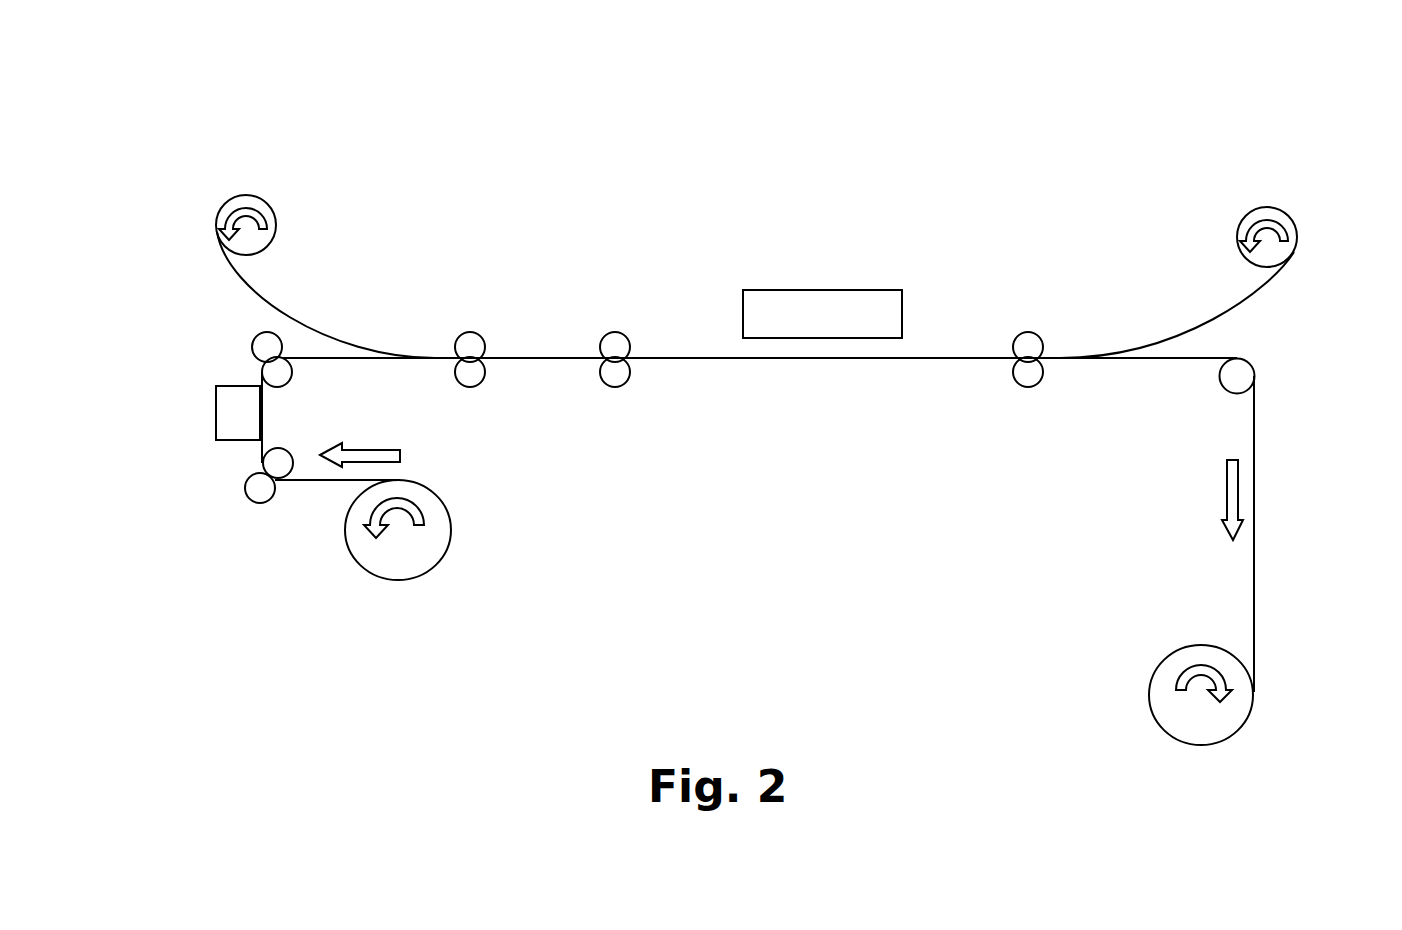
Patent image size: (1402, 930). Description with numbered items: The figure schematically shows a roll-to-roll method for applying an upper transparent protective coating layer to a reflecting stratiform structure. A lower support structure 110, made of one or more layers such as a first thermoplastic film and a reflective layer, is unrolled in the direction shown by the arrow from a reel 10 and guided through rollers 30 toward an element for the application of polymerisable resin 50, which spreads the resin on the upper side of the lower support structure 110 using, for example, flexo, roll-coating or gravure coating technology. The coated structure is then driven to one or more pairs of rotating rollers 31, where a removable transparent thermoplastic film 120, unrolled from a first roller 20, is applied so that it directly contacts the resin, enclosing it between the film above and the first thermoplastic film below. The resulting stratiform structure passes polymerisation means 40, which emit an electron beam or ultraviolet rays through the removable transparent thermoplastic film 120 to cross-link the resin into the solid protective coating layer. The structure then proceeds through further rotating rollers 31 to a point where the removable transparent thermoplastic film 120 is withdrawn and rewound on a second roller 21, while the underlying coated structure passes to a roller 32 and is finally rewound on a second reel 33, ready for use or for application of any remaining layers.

The reel 10 is at (452, 560).
The first roller 20 is at (215, 210).
The second roller 21 is at (1278, 203).
The rollers 30 is at (252, 340).
The pairs of rotating rollers 31 is at (478, 397).
The roller 32 is at (1253, 357).
The second reel 33 is at (1148, 682).
The polymerisation means 40 is at (782, 288).
The element for the application of polymerisable resin 50 is at (208, 412).
The lower support structure 110 is at (347, 487).
The removable transparent thermoplastic film 120 is at (309, 313).